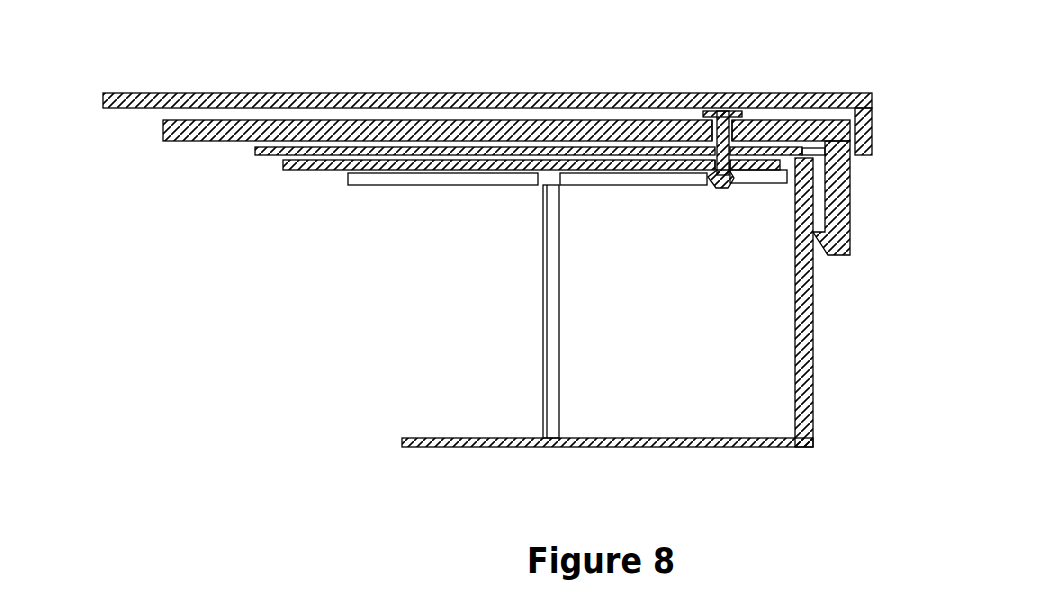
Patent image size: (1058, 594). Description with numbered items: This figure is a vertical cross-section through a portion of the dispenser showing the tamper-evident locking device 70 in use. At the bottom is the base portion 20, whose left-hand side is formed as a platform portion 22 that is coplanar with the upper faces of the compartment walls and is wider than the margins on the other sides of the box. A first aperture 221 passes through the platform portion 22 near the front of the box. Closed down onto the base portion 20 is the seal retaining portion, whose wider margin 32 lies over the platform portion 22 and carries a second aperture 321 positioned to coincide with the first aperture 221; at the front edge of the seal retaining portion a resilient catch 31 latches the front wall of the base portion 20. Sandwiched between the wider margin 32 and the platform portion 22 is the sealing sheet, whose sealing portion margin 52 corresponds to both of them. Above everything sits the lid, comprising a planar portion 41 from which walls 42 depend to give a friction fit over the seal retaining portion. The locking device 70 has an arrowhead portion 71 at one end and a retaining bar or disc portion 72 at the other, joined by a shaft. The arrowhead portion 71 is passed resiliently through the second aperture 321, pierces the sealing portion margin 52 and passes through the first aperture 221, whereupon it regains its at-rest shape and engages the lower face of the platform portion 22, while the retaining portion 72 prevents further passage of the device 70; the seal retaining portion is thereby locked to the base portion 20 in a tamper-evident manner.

The base portion 20 is at (388, 468).
The platform portion 22 is at (283, 165).
The first aperture 221 is at (705, 174).
The resilient catch 31 is at (852, 202).
The wider margin 32 is at (163, 122).
The second aperture 321 is at (707, 127).
The planar portion 41 is at (100, 92).
The walls 42 is at (872, 140).
The sealing portion margin 52 is at (255, 150).
The locking device 70 is at (720, 108).
The arrowhead portion 71 is at (733, 187).
The retaining portion 72 is at (743, 114).